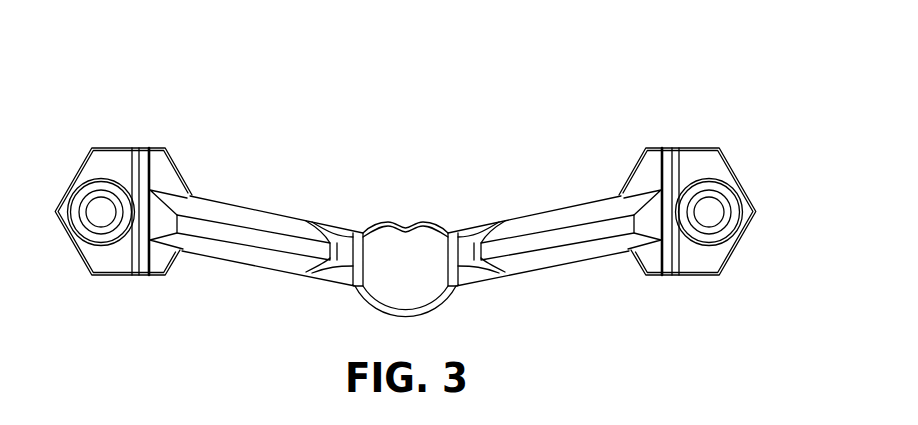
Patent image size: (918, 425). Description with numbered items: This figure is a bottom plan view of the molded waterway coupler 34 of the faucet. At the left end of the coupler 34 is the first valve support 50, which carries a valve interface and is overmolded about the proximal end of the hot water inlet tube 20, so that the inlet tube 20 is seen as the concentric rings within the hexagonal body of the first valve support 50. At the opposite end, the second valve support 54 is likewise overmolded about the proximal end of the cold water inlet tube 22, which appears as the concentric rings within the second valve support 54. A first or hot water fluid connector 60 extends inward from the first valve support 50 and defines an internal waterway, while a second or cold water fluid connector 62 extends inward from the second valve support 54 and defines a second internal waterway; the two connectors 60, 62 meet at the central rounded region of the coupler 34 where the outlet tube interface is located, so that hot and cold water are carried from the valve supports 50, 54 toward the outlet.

The hot water inlet tube 20 is at (88, 192).
The cold water inlet tube 22 is at (718, 195).
The coupler 34 is at (599, 76).
The first valve support 50 is at (122, 278).
The second valve support 54 is at (690, 280).
The first fluid connector 60 is at (253, 210).
The second fluid connector 62 is at (523, 218).